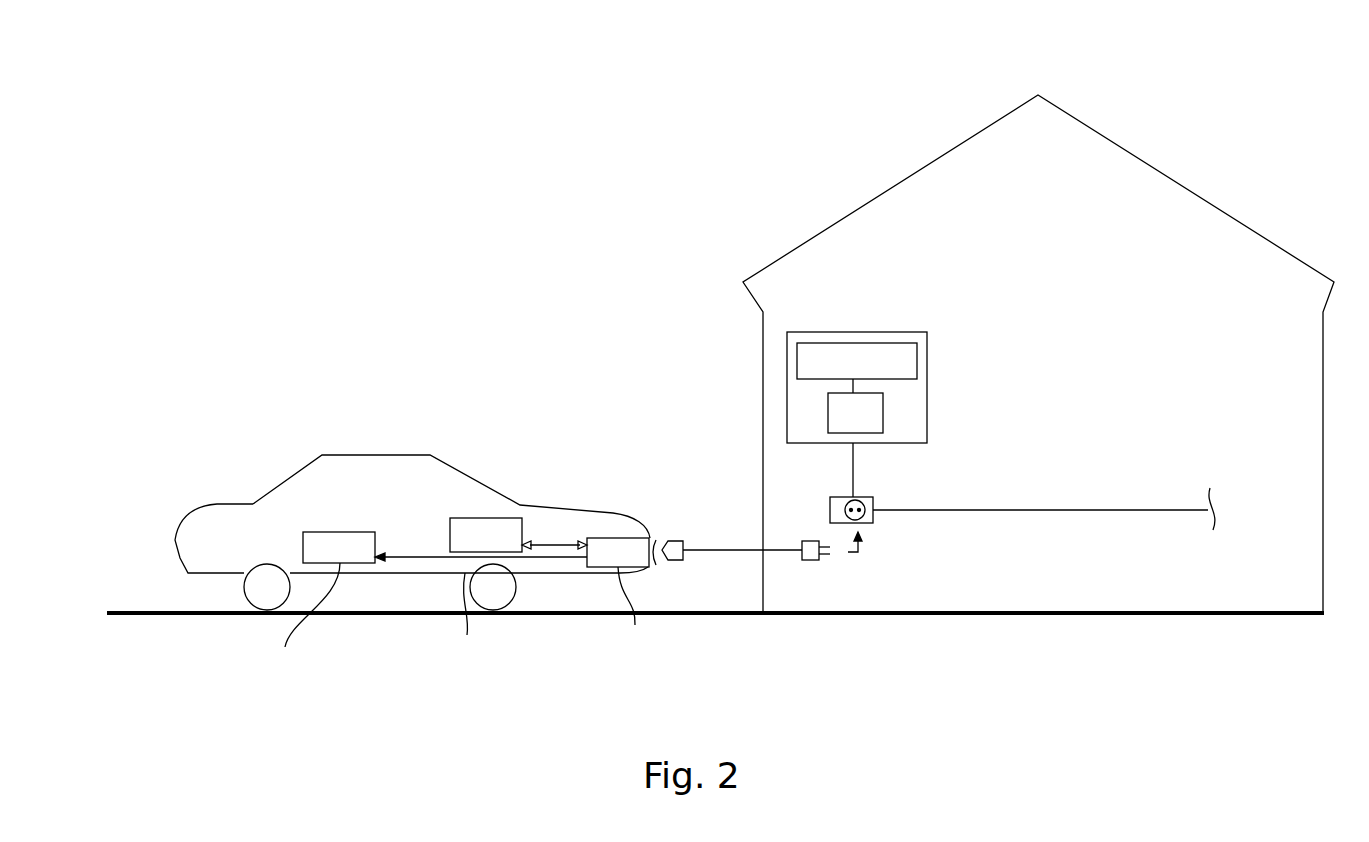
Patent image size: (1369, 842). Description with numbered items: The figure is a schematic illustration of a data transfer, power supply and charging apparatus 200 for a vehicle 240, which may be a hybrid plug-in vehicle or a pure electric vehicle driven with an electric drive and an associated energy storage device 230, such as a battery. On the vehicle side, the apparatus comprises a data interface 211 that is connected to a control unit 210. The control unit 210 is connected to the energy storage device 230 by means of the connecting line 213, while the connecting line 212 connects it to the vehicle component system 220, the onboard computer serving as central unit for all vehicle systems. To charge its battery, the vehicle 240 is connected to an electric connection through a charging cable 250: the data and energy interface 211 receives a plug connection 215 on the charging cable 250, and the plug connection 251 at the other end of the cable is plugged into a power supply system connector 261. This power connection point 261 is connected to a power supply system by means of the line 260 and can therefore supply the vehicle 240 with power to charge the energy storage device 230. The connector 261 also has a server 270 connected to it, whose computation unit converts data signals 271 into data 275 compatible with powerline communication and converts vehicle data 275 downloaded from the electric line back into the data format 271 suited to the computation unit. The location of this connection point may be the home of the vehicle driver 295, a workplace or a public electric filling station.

The data transfer, power supply and charging apparatus 200 is at (541, 400).
The control unit 210 is at (644, 593).
The data interface 211 is at (652, 537).
The connecting line 212 is at (560, 540).
The connecting line 213 is at (398, 558).
The plug connection 215 is at (675, 540).
The vehicle component system 220 is at (496, 612).
The energy storage device 230 is at (305, 621).
The vehicle 240 is at (370, 472).
The charging cable 250 is at (715, 547).
The plug connection 251 is at (815, 540).
The line 260 is at (1044, 494).
The power supply system connector 261 is at (868, 523).
The server 270 is at (863, 332).
The data signals 271 is at (918, 348).
The data compatible with powerline communication 275 is at (877, 410).
The home of the vehicle driver 295 is at (872, 233).